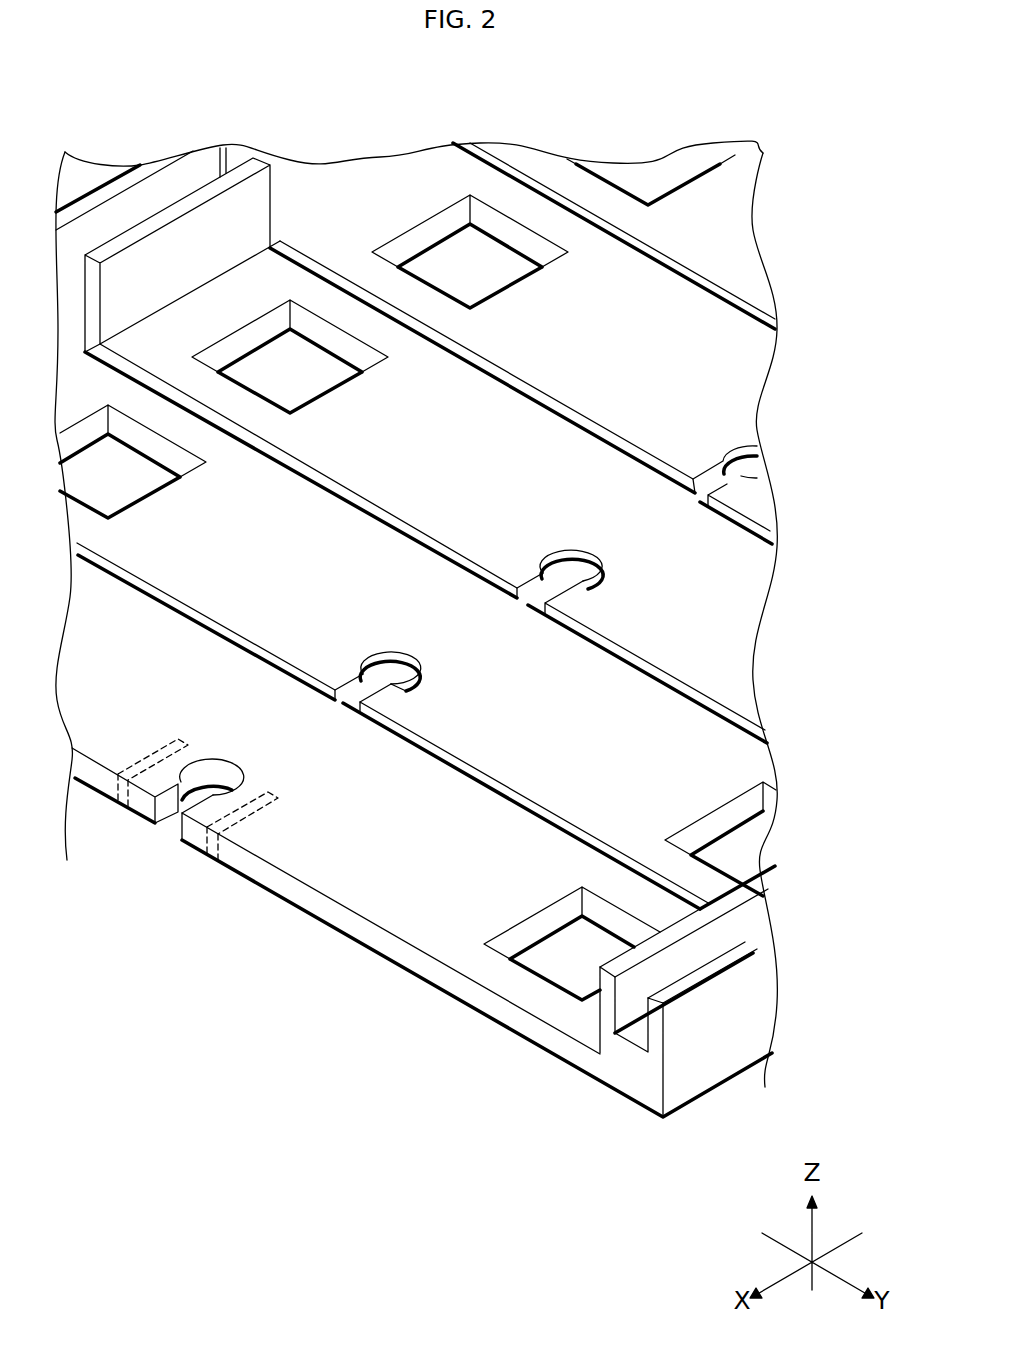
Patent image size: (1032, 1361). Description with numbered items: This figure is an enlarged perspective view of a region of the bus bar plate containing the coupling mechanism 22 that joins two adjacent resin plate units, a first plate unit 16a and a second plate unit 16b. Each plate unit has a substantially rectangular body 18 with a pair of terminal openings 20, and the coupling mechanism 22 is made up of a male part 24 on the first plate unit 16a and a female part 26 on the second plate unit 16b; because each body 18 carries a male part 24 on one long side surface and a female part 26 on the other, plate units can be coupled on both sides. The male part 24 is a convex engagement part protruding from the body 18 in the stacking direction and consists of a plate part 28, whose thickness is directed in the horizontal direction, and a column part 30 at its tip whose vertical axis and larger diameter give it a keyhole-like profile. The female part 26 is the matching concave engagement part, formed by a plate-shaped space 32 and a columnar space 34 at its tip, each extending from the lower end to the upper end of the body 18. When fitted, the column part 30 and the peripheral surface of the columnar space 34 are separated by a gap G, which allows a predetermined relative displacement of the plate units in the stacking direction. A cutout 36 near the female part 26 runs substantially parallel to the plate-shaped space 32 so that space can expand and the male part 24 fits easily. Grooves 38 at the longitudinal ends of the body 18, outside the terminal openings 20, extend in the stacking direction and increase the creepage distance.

The first plate unit 16a is at (689, 1108).
The second plate unit 16b is at (782, 772).
The body 18 is at (690, 735).
The terminal opening 20 is at (545, 922).
The coupling mechanism 22 is at (348, 649).
The male part 24 is at (476, 617).
The female part 26 is at (289, 832).
The plate part 28 is at (580, 488).
The column part 30 is at (572, 568).
The plate-shaped space 32 is at (165, 807).
The columnar space 34 is at (210, 779).
The cutout 36 is at (263, 812).
The groove 38 is at (740, 930).
The gap G is at (417, 668).